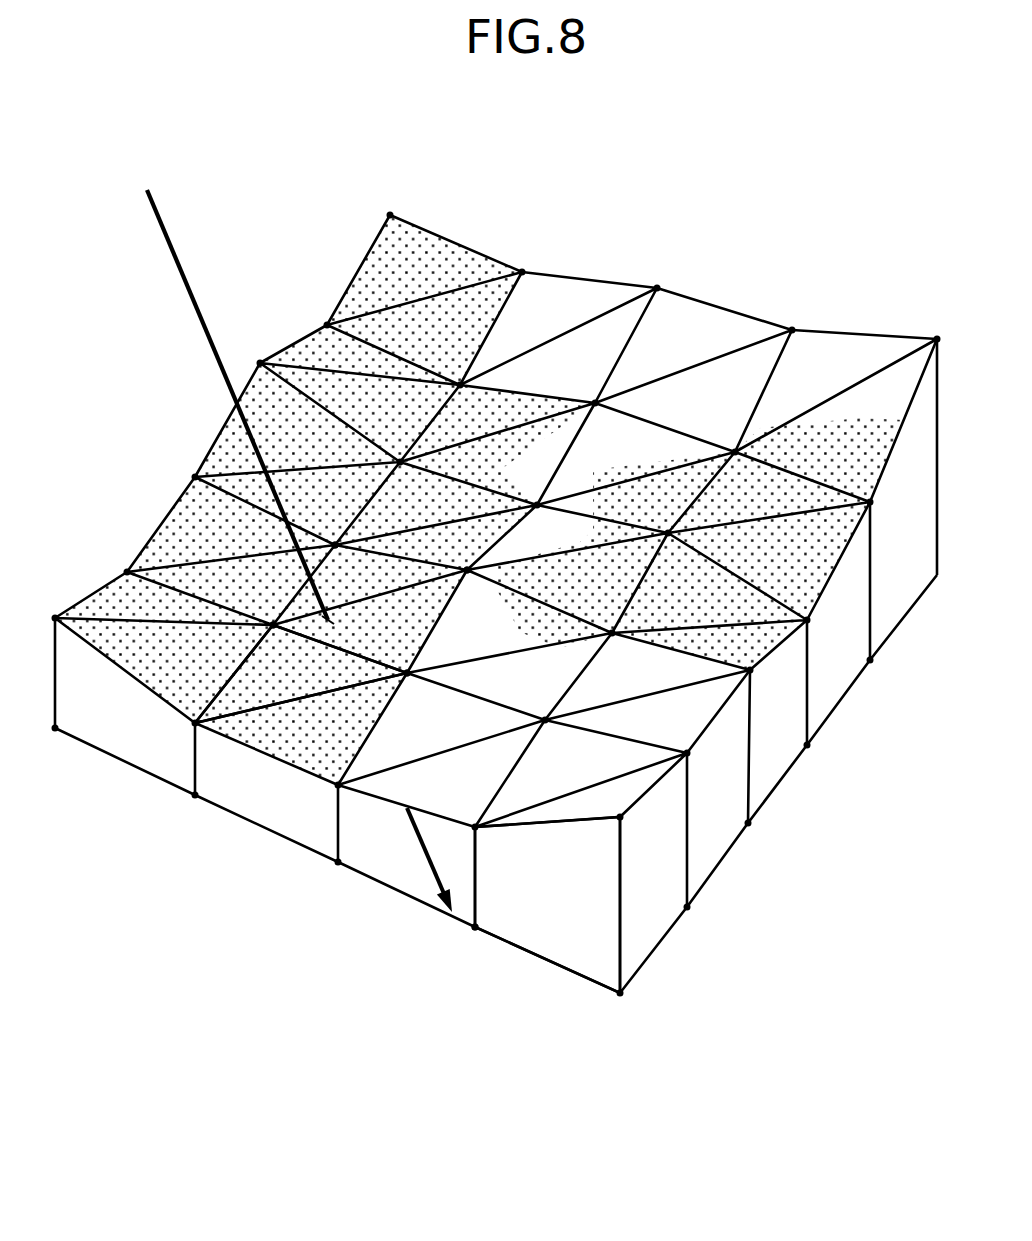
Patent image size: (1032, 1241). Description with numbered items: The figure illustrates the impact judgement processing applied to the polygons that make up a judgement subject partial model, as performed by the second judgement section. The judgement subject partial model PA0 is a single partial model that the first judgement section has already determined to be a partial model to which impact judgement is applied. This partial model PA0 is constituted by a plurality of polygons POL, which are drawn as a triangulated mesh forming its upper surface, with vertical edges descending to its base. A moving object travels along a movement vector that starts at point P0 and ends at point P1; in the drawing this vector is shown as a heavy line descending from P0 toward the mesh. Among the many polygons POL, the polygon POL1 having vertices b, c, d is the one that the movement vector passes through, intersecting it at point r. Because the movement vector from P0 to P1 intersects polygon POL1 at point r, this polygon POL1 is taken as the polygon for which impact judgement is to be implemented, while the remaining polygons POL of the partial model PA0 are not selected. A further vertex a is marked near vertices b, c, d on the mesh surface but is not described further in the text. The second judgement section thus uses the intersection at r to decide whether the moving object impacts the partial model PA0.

The start point of movement vector P0 is at (237, 394).
The polygons POL is at (262, 733).
The polygon POL1 is at (340, 677).
The end point of movement vector P1 is at (481, 950).
The judgement subject partial model PA0 is at (478, 977).
The vertex a is at (328, 522).
The vertex b is at (265, 602).
The vertex c is at (460, 548).
The vertex d is at (428, 654).
The intersection point r is at (330, 621).